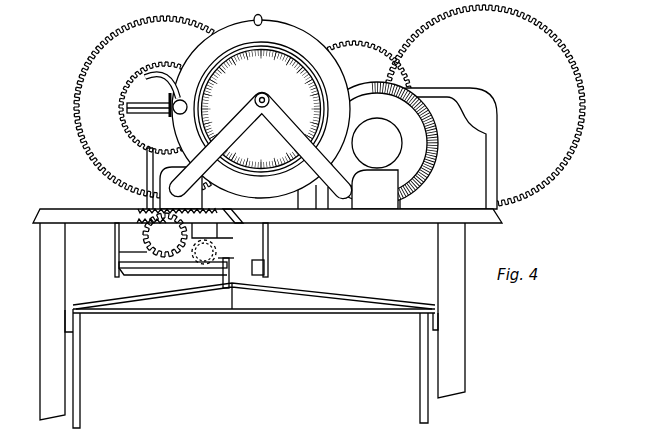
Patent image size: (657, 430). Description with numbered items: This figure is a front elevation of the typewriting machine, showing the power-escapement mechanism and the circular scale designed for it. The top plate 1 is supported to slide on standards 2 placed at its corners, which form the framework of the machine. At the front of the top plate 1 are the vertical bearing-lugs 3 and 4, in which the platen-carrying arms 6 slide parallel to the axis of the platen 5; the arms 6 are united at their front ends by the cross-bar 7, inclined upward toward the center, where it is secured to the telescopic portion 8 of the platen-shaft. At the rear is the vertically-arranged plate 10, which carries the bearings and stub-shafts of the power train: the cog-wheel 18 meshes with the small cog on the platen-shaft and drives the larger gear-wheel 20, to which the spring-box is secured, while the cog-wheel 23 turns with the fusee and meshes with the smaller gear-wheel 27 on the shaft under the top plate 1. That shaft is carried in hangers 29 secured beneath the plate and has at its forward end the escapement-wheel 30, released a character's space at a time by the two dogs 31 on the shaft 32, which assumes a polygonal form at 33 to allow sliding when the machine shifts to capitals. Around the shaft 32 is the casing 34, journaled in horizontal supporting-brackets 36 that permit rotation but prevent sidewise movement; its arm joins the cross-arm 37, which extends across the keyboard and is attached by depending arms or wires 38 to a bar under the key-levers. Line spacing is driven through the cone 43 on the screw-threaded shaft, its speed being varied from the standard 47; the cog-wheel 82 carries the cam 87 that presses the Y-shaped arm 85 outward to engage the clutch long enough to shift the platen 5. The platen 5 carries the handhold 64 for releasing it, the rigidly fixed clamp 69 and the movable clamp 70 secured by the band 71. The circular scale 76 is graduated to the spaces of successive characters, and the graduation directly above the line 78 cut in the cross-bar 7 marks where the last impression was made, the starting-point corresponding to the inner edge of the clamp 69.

The top plate 1 is at (480, 224).
The standards 2 is at (72, 278).
The vertical bearing-lug 3 is at (187, 196).
The vertical bearing-lug 4 is at (375, 189).
The platen 5 is at (300, 35).
The platen-carrying arms 6 is at (160, 174).
The cross-bar 7 is at (236, 138).
The telescopic portion of the platen-shaft 8 is at (268, 96).
The vertically-arranged plate 10 is at (448, 148).
The cog-wheel 18 is at (354, 99).
The gear-wheel 20 is at (484, 106).
The cog-wheel 23 is at (165, 107).
The gear-wheel 27 is at (115, 265).
The hangers 29 is at (115, 242).
The escapement-wheel 30 is at (165, 235).
The dogs 31 is at (167, 265).
The shaft 32 is at (128, 276).
The polygonal portion of the shaft 33 is at (268, 272).
The casing 34 is at (213, 255).
The horizontal supporting-brackets 36 is at (254, 296).
The cross-arm 37 is at (236, 308).
The depending arms or wires 38 is at (79, 375).
The cone 43 is at (377, 143).
The standard 47 is at (310, 205).
The handhold 64 is at (261, 109).
The clamp 69 is at (257, 15).
The clamp 70 is at (181, 100).
The band 71 is at (261, 104).
The scale 76 is at (327, 112).
The line 78 is at (251, 95).
The cog-wheel 82 is at (165, 108).
The Y-shaped arm 85 is at (127, 108).
The cam 87 is at (161, 95).